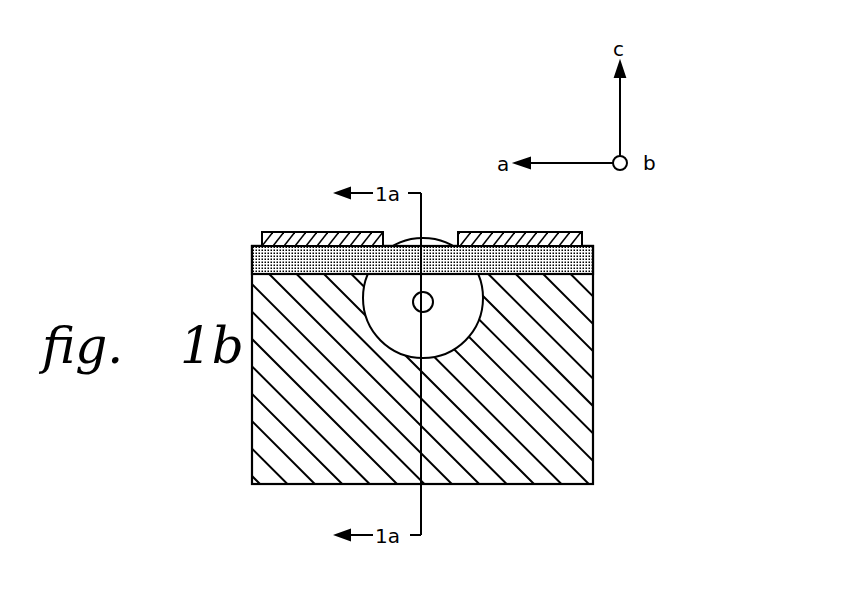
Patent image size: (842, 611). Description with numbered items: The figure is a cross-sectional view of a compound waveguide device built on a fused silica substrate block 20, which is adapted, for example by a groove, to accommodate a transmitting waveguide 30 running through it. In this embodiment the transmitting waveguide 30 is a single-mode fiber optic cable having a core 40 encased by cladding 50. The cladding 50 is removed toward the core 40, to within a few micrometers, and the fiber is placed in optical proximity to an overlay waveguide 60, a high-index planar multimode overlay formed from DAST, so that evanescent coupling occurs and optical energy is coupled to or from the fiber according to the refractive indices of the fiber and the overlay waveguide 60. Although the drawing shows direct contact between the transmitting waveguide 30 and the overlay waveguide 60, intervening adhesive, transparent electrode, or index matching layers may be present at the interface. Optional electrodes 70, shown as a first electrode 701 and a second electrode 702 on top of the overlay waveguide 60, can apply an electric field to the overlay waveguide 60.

The fused silica substrate block 20 is at (535, 433).
The transmitting waveguide 30 is at (372, 345).
The core 40 is at (433, 304).
The cladding 50 is at (440, 349).
The overlay waveguide 60 is at (593, 257).
The electrodes 70 is at (409, 165).
The first electrode 701 is at (288, 232).
The second electrode 702 is at (475, 232).